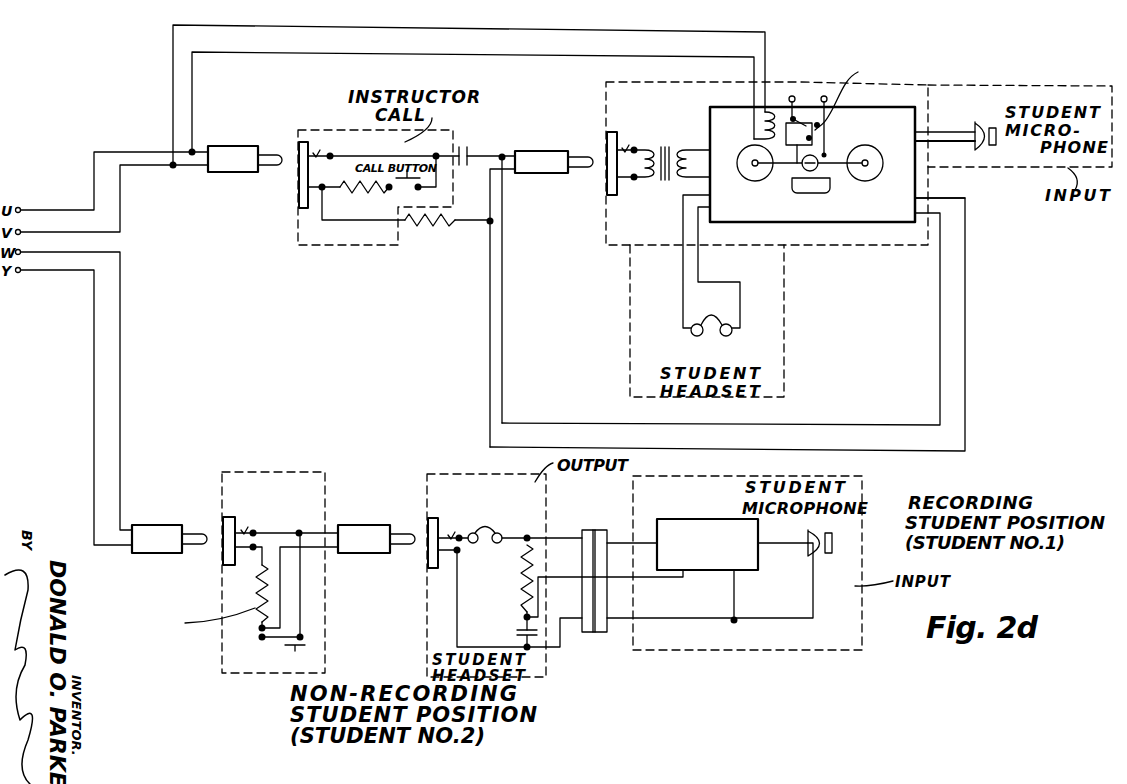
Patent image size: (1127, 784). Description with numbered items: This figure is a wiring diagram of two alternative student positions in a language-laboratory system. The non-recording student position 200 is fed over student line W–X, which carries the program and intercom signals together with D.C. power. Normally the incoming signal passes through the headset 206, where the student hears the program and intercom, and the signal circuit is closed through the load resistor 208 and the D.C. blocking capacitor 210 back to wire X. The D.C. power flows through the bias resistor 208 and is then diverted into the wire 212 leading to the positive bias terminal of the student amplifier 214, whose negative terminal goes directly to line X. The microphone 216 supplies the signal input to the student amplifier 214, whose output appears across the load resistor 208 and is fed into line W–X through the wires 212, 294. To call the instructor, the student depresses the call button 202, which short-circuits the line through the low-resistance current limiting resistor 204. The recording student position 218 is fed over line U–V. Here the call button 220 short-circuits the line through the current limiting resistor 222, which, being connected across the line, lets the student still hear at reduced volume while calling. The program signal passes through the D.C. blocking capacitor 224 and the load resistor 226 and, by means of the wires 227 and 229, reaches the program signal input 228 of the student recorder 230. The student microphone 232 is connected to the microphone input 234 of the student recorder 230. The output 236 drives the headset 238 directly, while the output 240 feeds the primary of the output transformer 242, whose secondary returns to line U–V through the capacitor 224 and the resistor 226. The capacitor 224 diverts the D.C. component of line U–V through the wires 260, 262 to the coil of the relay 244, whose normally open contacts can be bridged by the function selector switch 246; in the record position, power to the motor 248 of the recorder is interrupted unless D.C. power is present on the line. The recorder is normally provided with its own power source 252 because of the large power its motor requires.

The non-recording student position 200 is at (246, 539).
The call button 202 is at (296, 652).
The current limiting resistor 204 is at (258, 606).
The headset 206 is at (487, 552).
The load resistor 208 is at (527, 600).
The D.C. blocking capacitor 210 is at (511, 634).
The wire 212 is at (640, 578).
The student amplifier 214 is at (723, 522).
The microphone 216 is at (810, 550).
The recording student position 218 is at (843, 66).
The call button 220 is at (400, 198).
The current limiting resistor 222 is at (369, 200).
The D.C. blocking capacitor 224 is at (463, 143).
The load resistor 226 is at (425, 230).
The wire 227 is at (833, 424).
The program signal input 228 is at (919, 202).
The wire 229 is at (884, 451).
The student recorder 230 is at (845, 222).
The student microphone 232 is at (921, 143).
The microphone input 234 is at (920, 134).
The output 236 is at (707, 218).
The headset 238 is at (725, 315).
The output 240 is at (694, 157).
The output transformer 242 is at (660, 146).
The relay 244 is at (764, 126).
The function selector switch 246 is at (808, 140).
The motor 248 is at (800, 168).
The power source 252 is at (826, 88).
The wire 260 is at (470, 32).
The wire 262 is at (470, 62).
The wire 294 is at (546, 540).